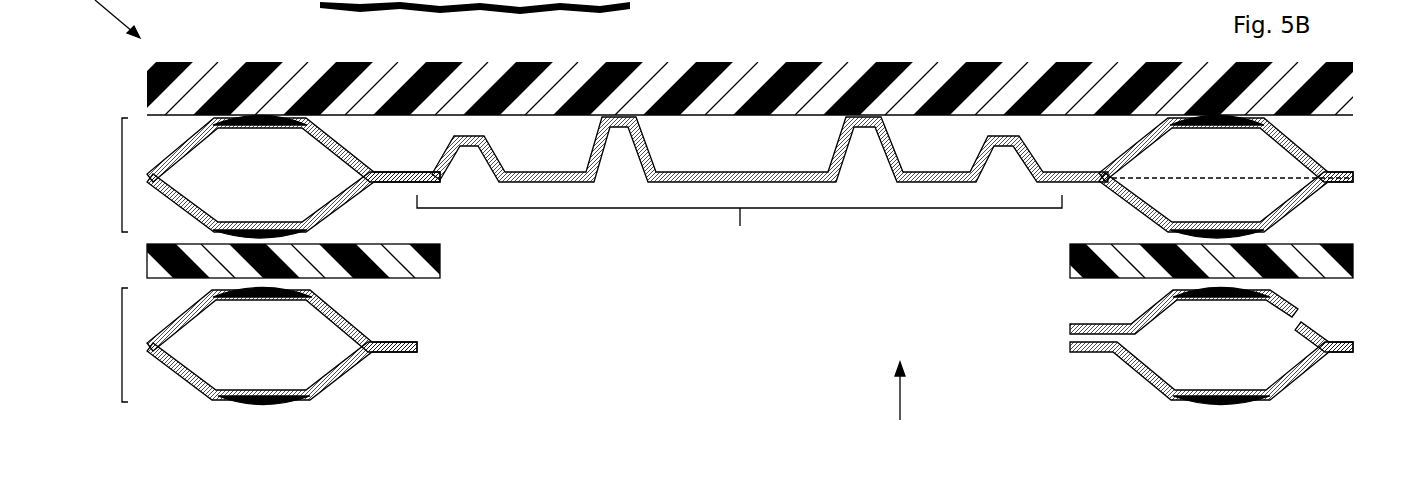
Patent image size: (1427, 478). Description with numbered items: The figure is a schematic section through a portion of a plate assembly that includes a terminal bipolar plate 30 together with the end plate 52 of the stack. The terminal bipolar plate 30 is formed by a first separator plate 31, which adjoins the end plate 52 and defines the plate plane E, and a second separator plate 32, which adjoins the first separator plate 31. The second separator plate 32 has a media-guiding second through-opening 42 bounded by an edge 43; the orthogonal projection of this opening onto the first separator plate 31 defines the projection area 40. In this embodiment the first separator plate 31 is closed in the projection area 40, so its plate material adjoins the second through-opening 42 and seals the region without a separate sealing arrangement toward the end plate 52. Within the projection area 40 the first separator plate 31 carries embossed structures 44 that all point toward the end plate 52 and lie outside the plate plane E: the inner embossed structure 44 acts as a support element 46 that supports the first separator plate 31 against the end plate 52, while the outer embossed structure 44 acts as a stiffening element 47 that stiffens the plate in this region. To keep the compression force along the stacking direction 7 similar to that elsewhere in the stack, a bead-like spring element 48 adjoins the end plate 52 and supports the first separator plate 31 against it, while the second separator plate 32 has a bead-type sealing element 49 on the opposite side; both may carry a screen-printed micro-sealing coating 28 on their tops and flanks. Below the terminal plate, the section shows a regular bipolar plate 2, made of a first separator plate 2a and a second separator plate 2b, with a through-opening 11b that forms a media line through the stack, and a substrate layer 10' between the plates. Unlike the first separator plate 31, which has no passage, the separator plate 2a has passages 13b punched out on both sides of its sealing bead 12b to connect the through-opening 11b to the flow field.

The end plate 52 is at (147, 80).
The terminal bipolar plate 30 is at (122, 178).
The first separator plate 31 is at (183, 146).
The second separator plate 32 is at (183, 208).
The coating 28 is at (307, 120).
The spring element 48 is at (368, 163).
The sealing element 49 is at (360, 198).
The edge 43 is at (415, 181).
The projection area 40 is at (769, 149).
The second through-opening 42 is at (739, 226).
The embossed structure 44 is at (458, 156).
The support element 46 is at (648, 153).
The stiffening element 47 is at (500, 163).
The plate plane E is at (1360, 177).
The substrate layer 10' is at (750, 285).
The bipolar plate 2 is at (122, 347).
The first separator plate 2a is at (178, 320).
The second separator plate 2b is at (183, 380).
The sealing bead 12b is at (350, 363).
The passage 13b is at (1293, 317).
The through-opening 11b is at (765, 407).
The stacking direction 7 is at (900, 383).